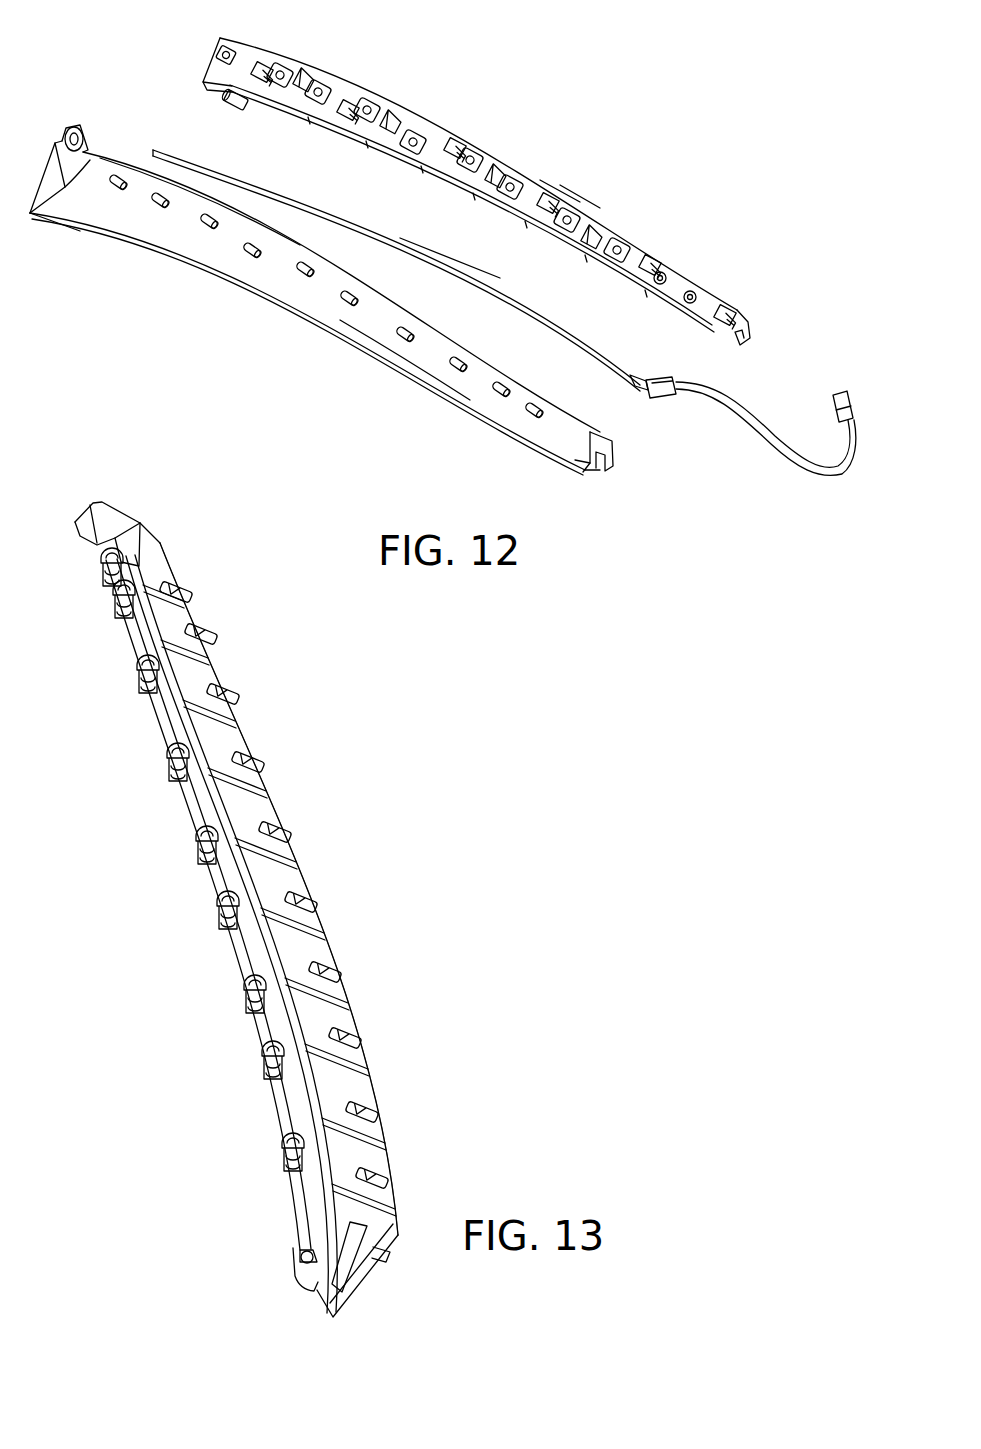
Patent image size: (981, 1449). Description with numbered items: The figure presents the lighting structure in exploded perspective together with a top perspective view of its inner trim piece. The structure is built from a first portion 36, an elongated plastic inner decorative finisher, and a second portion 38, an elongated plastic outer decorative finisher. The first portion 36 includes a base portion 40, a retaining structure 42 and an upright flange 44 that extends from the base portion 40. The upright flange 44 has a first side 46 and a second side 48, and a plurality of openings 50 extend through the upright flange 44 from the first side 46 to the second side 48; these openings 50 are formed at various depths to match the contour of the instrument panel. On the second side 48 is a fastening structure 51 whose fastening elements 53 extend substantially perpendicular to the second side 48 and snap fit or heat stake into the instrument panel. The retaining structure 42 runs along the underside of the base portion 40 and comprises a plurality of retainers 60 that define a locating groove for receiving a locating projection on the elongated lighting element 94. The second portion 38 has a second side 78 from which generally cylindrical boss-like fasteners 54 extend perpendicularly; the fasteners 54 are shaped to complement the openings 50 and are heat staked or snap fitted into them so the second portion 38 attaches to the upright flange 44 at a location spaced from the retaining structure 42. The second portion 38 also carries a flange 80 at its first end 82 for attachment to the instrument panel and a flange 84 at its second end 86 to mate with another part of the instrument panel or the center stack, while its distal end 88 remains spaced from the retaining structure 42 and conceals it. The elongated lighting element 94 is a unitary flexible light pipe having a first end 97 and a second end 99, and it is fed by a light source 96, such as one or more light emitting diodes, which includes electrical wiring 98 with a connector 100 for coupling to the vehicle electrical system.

In FIG. 12, the first portion 36 is at (480, 155).
In FIG. 13, the first portion 36 is at (370, 1060).
In FIG. 12, the second portion 38 is at (169, 258).
In FIG. 13, the base portion 40 is at (318, 1296).
In FIG. 13, the retaining structure 42 is at (262, 1057).
In FIG. 13, the upright flange 44 is at (347, 984).
In FIG. 13, the first side 46 is at (285, 868).
In FIG. 12, the second side 48 is at (585, 226).
In FIG. 13, the openings 50 is at (172, 625).
In FIG. 12, the fastening structure 51 is at (676, 264).
In FIG. 12, the fastening elements 53 is at (265, 70).
In FIG. 12, the fasteners 54 is at (158, 208).
In FIG. 13, the retainers 60 is at (102, 588).
In FIG. 12, the second side 78 is at (378, 336).
In FIG. 12, the flange 80 is at (70, 128).
In FIG. 12, the first end 82 is at (33, 218).
In FIG. 12, the flange 84 is at (610, 455).
In FIG. 12, the second end 86 is at (583, 472).
In FIG. 12, the distal end 88 is at (111, 158).
In FIG. 12, the elongated lighting element 94 is at (448, 263).
In FIG. 12, the light source 96 is at (663, 400).
In FIG. 12, the first end 97 is at (637, 372).
In FIG. 12, the electrical wiring 98 is at (782, 445).
In FIG. 12, the second end 99 is at (157, 149).
In FIG. 12, the connector 100 is at (845, 393).